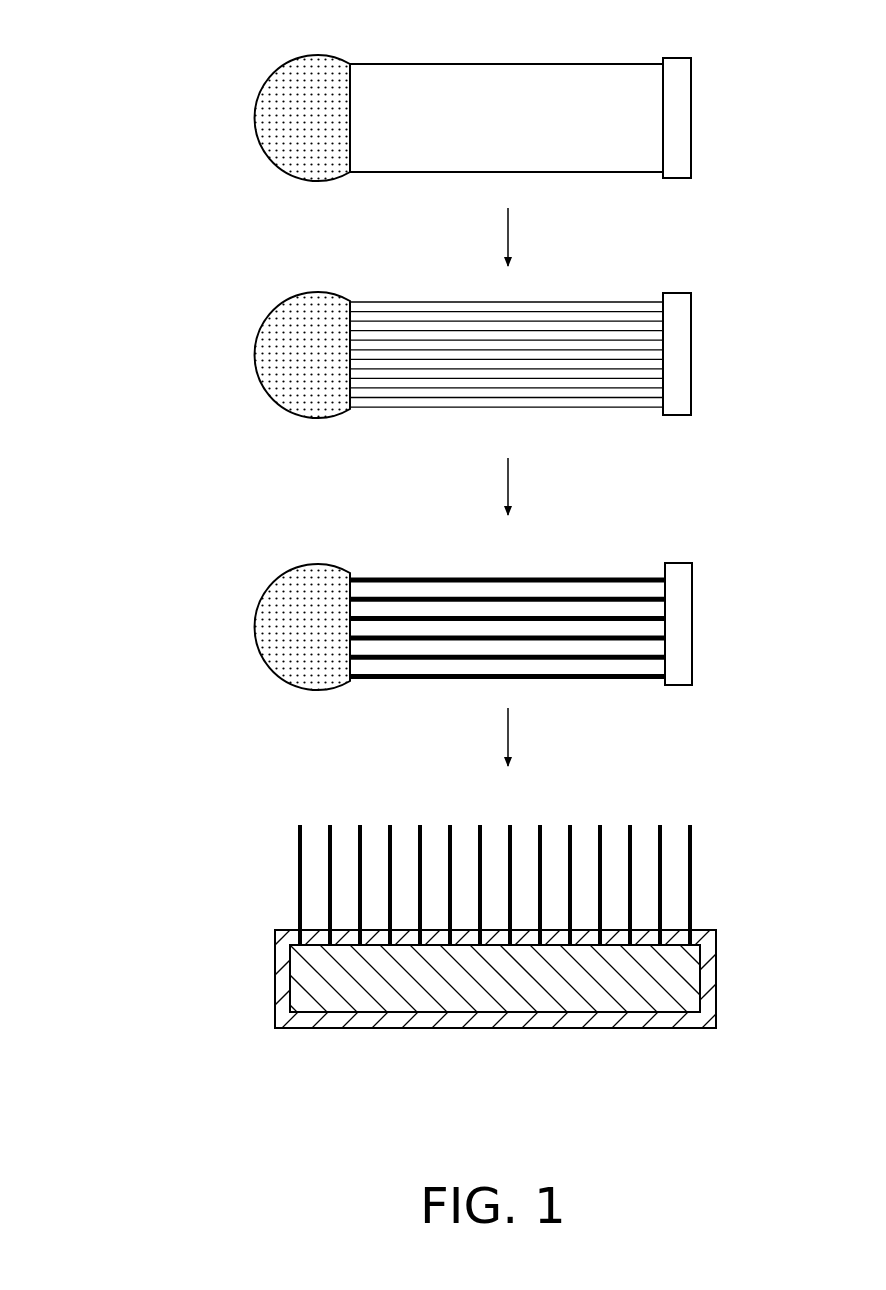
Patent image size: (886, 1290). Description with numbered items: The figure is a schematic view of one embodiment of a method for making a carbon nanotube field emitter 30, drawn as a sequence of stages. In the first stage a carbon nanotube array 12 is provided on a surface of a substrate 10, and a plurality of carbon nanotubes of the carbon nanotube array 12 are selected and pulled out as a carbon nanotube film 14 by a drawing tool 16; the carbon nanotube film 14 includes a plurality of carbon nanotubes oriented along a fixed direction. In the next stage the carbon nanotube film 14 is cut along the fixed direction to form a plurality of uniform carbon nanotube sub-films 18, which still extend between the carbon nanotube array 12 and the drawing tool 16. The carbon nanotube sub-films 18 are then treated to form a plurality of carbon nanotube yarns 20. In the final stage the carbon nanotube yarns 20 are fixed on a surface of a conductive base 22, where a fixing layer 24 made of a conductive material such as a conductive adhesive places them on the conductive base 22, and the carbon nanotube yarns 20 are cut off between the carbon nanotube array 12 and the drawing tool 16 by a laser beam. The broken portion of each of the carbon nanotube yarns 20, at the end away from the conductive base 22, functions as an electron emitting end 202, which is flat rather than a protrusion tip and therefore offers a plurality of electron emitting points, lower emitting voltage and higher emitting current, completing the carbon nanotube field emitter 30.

The substrate 10 is at (257, 118).
The carbon nanotube array 12 is at (295, 83).
The carbon nanotube film 14 is at (518, 90).
The drawing tool 16 is at (678, 112).
The carbon nanotube sub-films 18 is at (607, 305).
The carbon nanotube yarns 20 is at (558, 578).
The electron emitting end 202 is at (692, 833).
The conductive base 22 is at (287, 973).
The fixing layer 24 is at (327, 990).
The carbon nanotube field emitter 30 is at (240, 861).